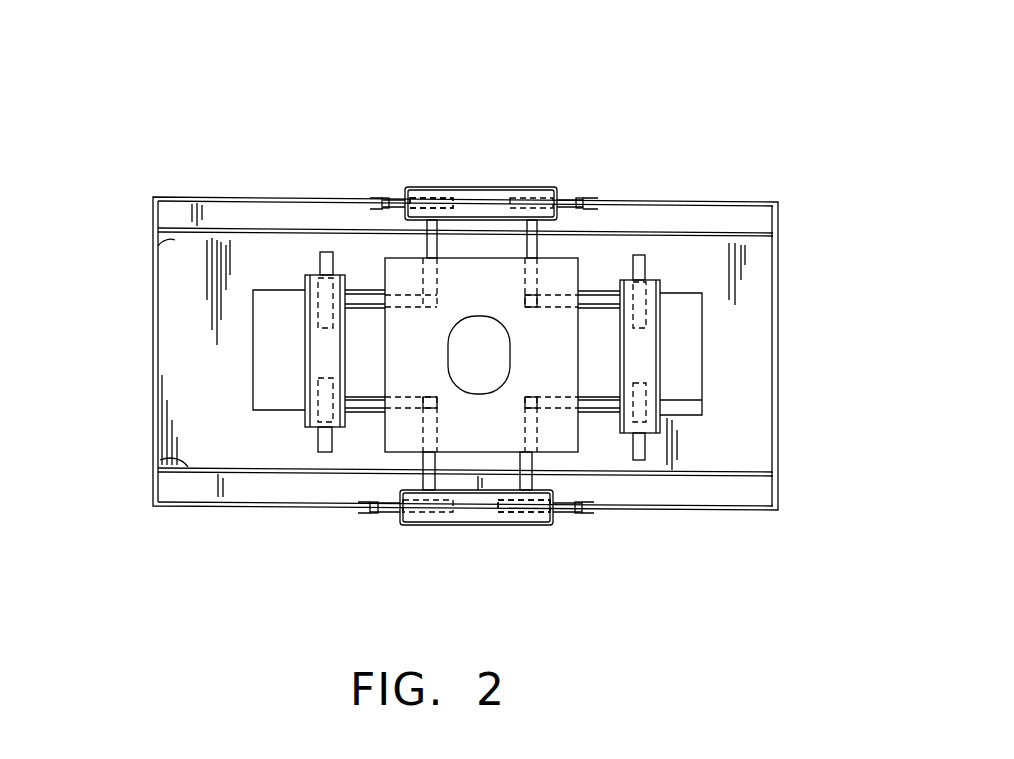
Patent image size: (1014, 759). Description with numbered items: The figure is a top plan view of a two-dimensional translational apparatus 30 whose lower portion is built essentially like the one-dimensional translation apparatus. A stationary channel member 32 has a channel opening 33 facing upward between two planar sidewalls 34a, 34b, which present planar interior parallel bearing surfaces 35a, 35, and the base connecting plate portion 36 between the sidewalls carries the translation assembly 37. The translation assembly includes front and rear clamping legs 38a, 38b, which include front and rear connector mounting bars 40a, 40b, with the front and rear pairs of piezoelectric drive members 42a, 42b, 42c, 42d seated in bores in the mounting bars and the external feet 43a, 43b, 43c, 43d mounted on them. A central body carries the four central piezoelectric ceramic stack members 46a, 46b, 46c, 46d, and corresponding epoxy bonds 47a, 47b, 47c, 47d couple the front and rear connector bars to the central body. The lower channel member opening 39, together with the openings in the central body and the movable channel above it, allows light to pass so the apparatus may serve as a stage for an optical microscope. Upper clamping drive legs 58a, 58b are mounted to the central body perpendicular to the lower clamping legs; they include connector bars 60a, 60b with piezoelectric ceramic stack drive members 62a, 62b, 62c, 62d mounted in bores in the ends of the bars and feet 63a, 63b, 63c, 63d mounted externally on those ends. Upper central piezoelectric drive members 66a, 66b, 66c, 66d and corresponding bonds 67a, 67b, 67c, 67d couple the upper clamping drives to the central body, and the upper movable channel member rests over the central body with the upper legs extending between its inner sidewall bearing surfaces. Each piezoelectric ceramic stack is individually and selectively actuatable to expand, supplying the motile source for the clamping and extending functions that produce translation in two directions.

The two-dimensional translational apparatus 30 is at (874, 86).
The stationary channel member 32 is at (215, 197).
The channel opening 33 is at (757, 428).
The planar sidewall 34a is at (750, 219).
The planar sidewall 34b is at (757, 492).
The planar interior parallel bearing surface 35 is at (190, 468).
The planar interior parallel bearing surface 35a is at (173, 234).
The base connecting plate portion 36 is at (153, 421).
The translation assembly 37 is at (455, 180).
The front clamping leg 38a is at (290, 310).
The rear clamping leg 38b is at (670, 309).
The lower channel member opening 39 is at (688, 414).
The front connector mounting bar 40a is at (312, 390).
The rear connector mounting bar 40b is at (660, 400).
The piezoelectric drive member 42a is at (318, 320).
The piezoelectric drive member 42b is at (318, 380).
The piezoelectric drive member 42c is at (660, 338).
The piezoelectric drive member 42d is at (660, 385).
The external foot 43a is at (320, 254).
The external foot 43b is at (318, 448).
The external foot 43c is at (645, 257).
The external foot 43d is at (640, 454).
The central piezoelectric ceramic stack member 46a is at (408, 312).
The central piezoelectric ceramic stack member 46b is at (410, 407).
The central piezoelectric ceramic stack member 46c is at (549, 310).
The central piezoelectric ceramic stack member 46d is at (571, 397).
The epoxy bond 47a is at (352, 227).
The epoxy bond 47b is at (345, 413).
The epoxy bond 47c is at (543, 221).
The epoxy bond 47d is at (617, 413).
The upper clamping drive leg 58a is at (475, 180).
The upper clamping drive leg 58b is at (507, 527).
The connector bar 60a is at (494, 197).
The connector bar 60b is at (529, 538).
The piezoelectric ceramic stack drive member 62a is at (433, 184).
The piezoelectric ceramic stack drive member 62b is at (447, 514).
The piezoelectric ceramic stack drive member 62c is at (535, 193).
The piezoelectric ceramic stack drive member 62d is at (555, 527).
The foot 63a is at (383, 197).
The foot 63b is at (378, 505).
The foot 63c is at (583, 199).
The foot 63d is at (578, 508).
The upper central piezoelectric drive member 66a is at (420, 283).
The upper central piezoelectric drive member 66b is at (432, 412).
The upper central piezoelectric drive member 66c is at (521, 277).
The upper central piezoelectric drive member 66d is at (524, 443).
The bond 67a is at (353, 268).
The bond 67b is at (368, 497).
The bond 67c is at (616, 282).
The bond 67d is at (565, 490).